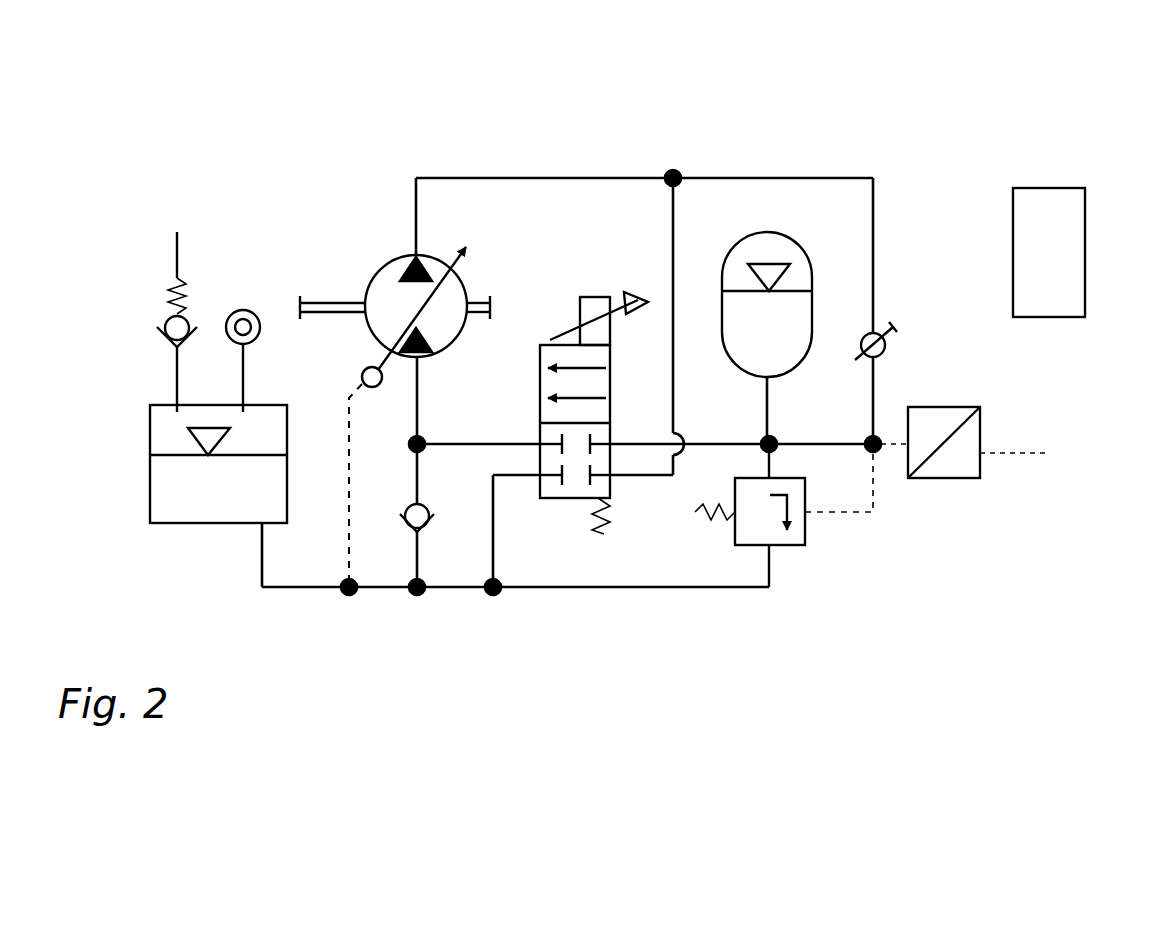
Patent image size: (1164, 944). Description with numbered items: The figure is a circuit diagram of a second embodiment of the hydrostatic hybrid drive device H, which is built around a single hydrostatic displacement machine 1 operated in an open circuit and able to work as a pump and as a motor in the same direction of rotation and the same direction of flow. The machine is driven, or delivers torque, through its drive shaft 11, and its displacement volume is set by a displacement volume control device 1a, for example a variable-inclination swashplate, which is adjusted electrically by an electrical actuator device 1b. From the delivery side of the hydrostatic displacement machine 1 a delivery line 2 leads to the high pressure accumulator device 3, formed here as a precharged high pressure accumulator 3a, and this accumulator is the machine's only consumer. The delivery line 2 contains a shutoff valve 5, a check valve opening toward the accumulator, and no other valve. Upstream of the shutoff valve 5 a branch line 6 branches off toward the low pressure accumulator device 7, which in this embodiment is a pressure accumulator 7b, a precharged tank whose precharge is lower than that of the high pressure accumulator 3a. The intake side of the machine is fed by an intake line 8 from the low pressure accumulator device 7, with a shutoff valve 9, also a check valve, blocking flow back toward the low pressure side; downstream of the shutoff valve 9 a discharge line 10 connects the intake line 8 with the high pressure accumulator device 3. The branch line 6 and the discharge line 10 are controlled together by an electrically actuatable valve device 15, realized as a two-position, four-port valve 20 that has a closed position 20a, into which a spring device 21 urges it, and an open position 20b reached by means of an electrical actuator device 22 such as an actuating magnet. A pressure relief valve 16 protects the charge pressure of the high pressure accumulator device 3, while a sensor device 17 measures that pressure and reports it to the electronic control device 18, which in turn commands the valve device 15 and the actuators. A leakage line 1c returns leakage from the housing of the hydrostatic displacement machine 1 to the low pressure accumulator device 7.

The hybrid drive device H is at (278, 195).
The hydrostatic displacement machine 1 is at (407, 290).
The displacement volume control device 1a is at (468, 244).
The electrical actuator device 1b is at (362, 376).
The leakage line 1c is at (349, 512).
The drive shaft 11 is at (322, 303).
The delivery line 2 is at (760, 176).
The high pressure accumulator device 3 is at (791, 240).
The high pressure accumulator 3a is at (812, 238).
The shutoff valve 5 is at (430, 352).
The branch line 6 is at (676, 205).
The low pressure accumulator device 7 is at (261, 406).
The pressure accumulator 7b is at (150, 438).
The intake line 8 is at (417, 472).
The shutoff valve 9 is at (438, 497).
The discharge line 10 is at (458, 442).
The valve device 15 is at (546, 503).
The pressure relief valve 16 is at (797, 525).
The sensor device 17 is at (970, 432).
The electronic control device 18 is at (1060, 268).
The two-position, four-port valve 20 is at (591, 444).
The closed position 20a is at (575, 488).
The open position 20b is at (612, 388).
The spring device 21 is at (606, 536).
The electrical actuator device 22 is at (600, 297).